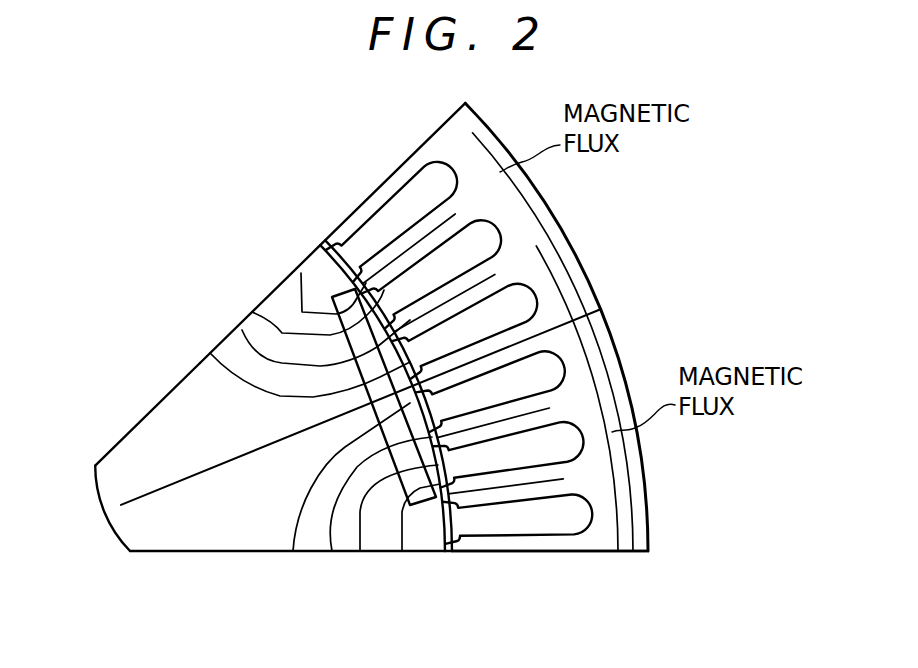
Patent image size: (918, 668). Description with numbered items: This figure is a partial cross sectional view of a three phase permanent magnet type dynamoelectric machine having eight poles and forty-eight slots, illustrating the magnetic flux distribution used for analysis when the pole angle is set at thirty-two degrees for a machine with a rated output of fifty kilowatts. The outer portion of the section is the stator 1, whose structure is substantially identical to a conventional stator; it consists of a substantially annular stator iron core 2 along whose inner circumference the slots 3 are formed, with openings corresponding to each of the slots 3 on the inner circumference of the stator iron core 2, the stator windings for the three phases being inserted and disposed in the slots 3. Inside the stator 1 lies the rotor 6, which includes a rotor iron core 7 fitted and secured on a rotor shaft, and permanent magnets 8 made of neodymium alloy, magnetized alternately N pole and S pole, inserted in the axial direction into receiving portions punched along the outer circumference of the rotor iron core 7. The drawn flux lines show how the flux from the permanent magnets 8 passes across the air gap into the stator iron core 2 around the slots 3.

The stator 1 is at (595, 283).
The stator iron core 2 is at (548, 544).
The slots 3 is at (496, 528).
The rotor 6 is at (178, 383).
The rotor iron core 7 is at (142, 434).
The permanent magnets 8 is at (412, 385).